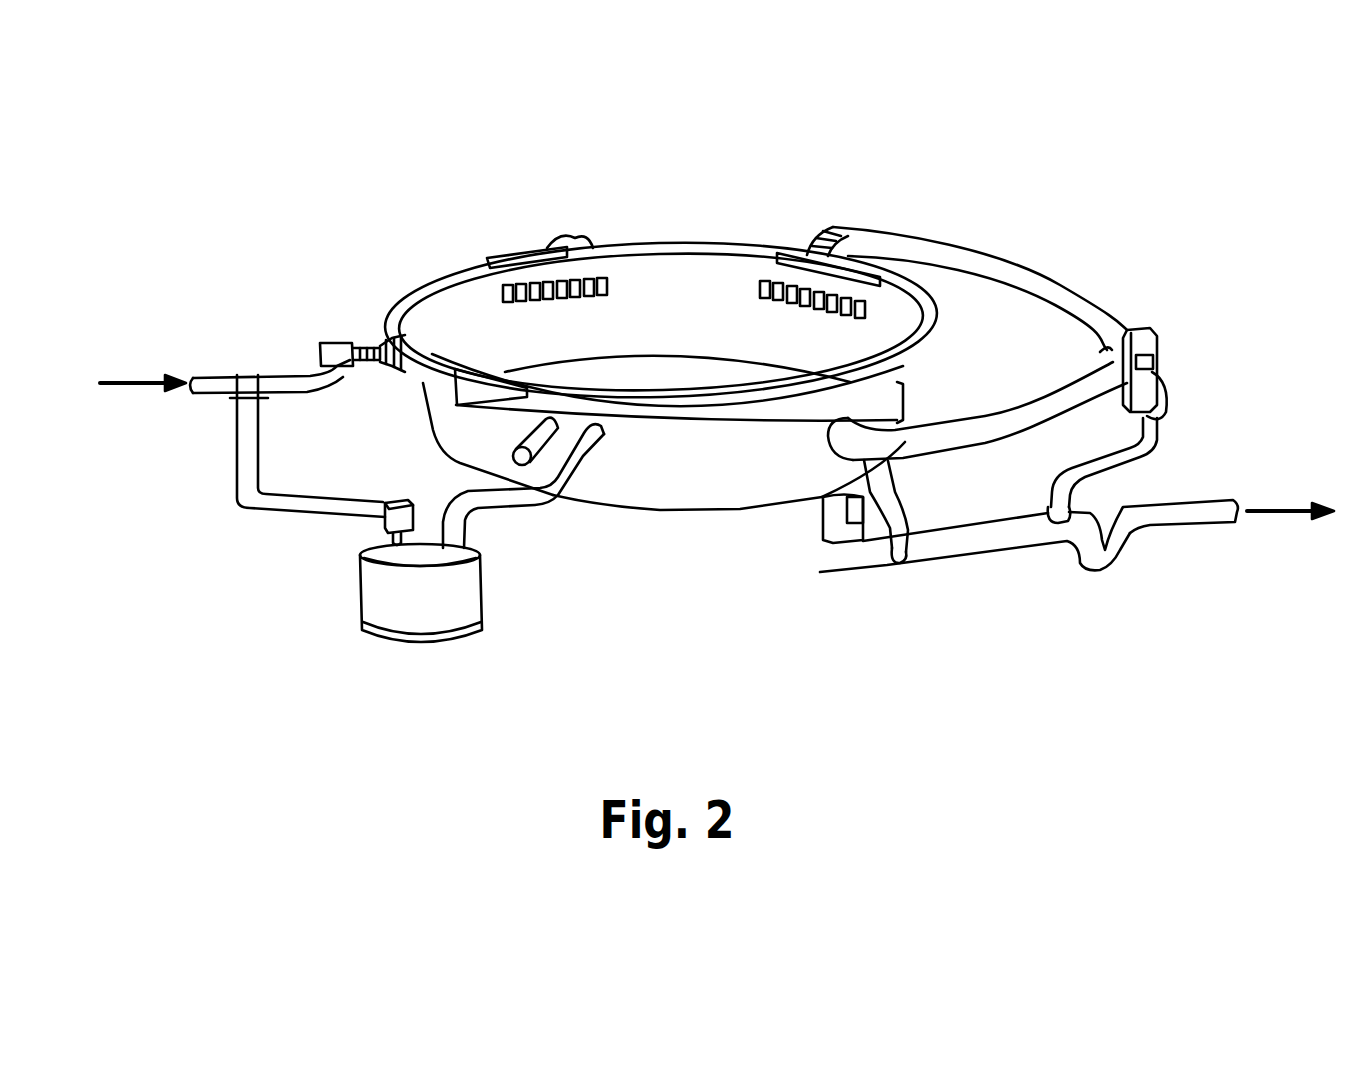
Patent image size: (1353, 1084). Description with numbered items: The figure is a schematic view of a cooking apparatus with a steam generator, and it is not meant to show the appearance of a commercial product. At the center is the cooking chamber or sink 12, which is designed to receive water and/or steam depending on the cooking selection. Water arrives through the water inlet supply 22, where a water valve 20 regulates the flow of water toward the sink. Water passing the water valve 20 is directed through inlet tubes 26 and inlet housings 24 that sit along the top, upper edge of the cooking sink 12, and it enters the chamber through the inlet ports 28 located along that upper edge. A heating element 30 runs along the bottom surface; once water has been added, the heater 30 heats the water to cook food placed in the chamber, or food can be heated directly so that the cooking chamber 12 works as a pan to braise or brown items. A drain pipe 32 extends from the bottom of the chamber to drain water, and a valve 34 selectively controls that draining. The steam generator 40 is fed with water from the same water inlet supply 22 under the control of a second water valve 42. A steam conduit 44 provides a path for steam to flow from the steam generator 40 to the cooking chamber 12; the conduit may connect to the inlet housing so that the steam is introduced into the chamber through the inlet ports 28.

The cooking chamber 12 is at (688, 304).
The water valve 20 is at (333, 342).
The water inlet supply 22 is at (218, 376).
The inlet housing 24 is at (776, 432).
The inlet tube 26 is at (403, 316).
The inlet port 28 is at (607, 284).
The heating element 30 is at (663, 508).
The drain pipe 32 is at (960, 543).
The valve 34 is at (853, 525).
The steam generator 40 is at (451, 615).
The water valve 42 is at (396, 520).
The steam conduit 44 is at (510, 506).